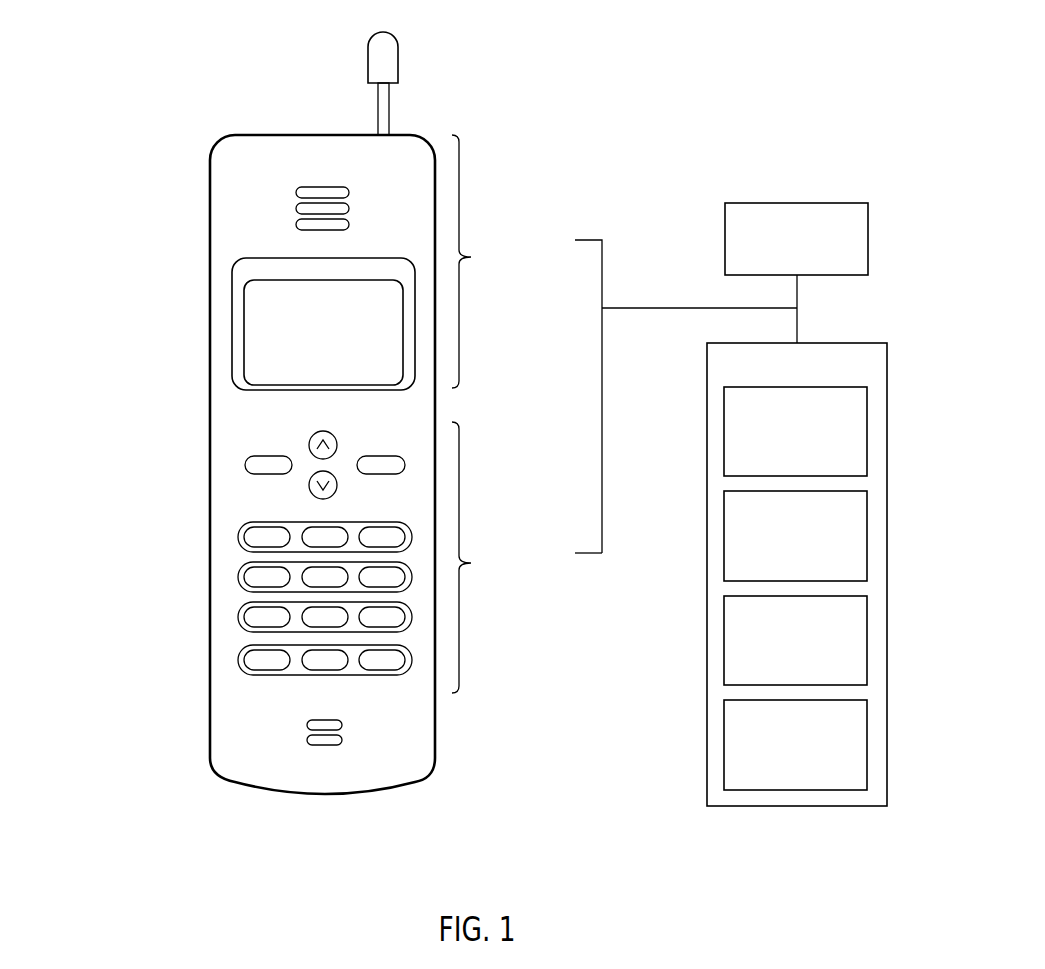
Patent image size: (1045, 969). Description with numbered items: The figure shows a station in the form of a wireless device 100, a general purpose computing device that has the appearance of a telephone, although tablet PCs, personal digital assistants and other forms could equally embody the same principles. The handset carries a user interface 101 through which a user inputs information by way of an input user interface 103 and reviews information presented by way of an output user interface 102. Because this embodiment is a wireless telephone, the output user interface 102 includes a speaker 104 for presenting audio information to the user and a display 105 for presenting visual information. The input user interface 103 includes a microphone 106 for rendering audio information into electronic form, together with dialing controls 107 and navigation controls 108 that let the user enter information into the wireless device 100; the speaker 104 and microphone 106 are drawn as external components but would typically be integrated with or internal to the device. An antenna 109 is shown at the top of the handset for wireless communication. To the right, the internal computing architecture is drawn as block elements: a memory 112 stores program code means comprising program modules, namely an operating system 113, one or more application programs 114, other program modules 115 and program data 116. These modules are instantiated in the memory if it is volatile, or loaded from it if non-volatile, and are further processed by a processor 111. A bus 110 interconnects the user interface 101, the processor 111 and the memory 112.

The wireless device 100 is at (633, 108).
The user interface 101 is at (210, 797).
The output user interface 102 is at (527, 344).
The input user interface 103 is at (527, 557).
The speaker 104 is at (188, 205).
The display 105 is at (188, 336).
The microphone 106 is at (188, 728).
The dialing controls 107 is at (203, 675).
The navigation controls 108 is at (188, 458).
The antenna 109 is at (432, 94).
The bus 110 is at (642, 308).
The processor 111 is at (781, 264).
The memory 112 is at (815, 378).
The operating system 113 is at (781, 466).
The application programs 114 is at (781, 570).
The program modules 115 is at (781, 675).
The program data 116 is at (781, 779).